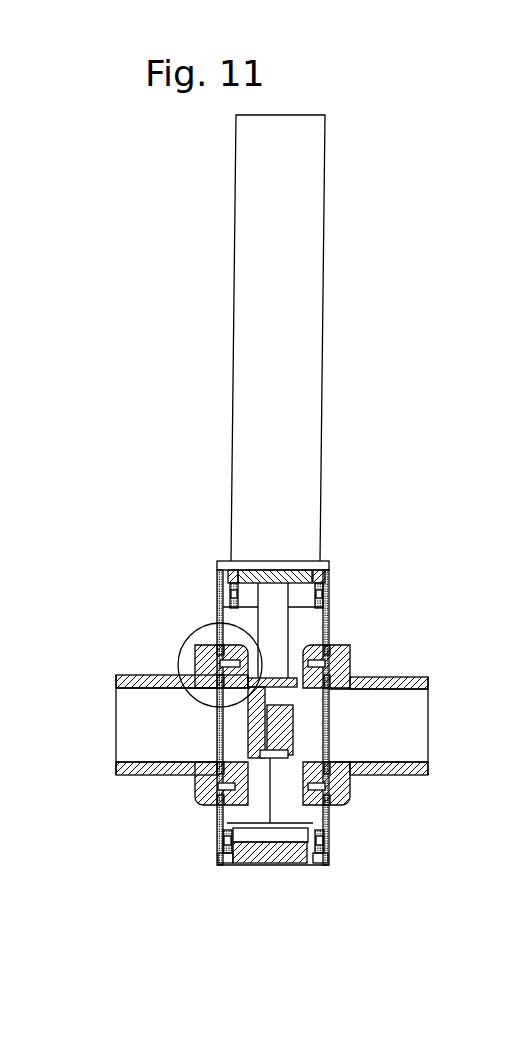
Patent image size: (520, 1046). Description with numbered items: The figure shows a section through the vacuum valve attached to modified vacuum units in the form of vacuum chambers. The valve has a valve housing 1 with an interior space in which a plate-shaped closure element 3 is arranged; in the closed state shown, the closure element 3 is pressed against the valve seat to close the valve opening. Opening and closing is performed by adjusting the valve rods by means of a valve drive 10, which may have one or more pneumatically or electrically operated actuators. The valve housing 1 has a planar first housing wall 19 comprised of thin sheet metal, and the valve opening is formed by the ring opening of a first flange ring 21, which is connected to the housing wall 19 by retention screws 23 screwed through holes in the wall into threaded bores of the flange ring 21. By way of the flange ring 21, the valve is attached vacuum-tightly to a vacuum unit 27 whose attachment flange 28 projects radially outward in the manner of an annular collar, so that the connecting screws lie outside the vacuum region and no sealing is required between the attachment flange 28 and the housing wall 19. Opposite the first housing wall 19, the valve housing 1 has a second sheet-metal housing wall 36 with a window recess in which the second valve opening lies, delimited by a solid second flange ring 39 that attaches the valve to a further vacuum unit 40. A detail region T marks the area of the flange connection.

The valve drive 10 is at (329, 310).
The valve housing 1 is at (332, 595).
The first housing wall 19 is at (220, 613).
The second housing wall 36 is at (330, 628).
The detail region T is at (193, 637).
The first flange ring 21 is at (220, 668).
The attachment flange 28 is at (345, 657).
The second flange ring 39 is at (337, 672).
The closure element 3 is at (248, 740).
The vacuum unit 27 is at (133, 777).
The further vacuum unit 40 is at (410, 779).
The retention screws 23 is at (330, 802).